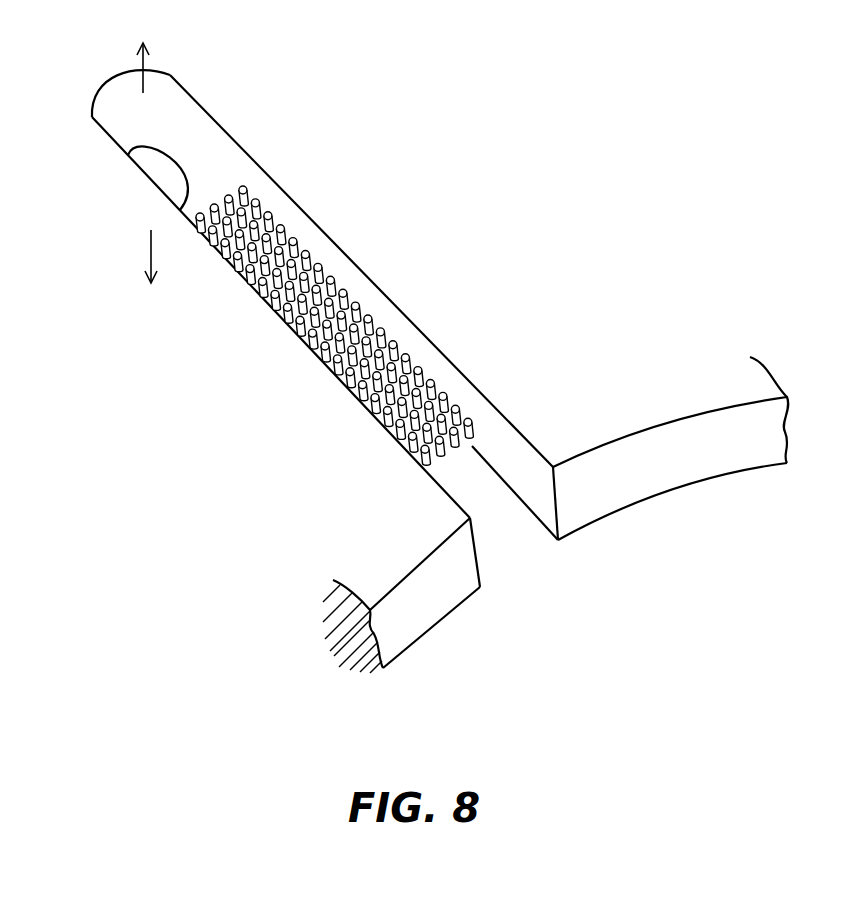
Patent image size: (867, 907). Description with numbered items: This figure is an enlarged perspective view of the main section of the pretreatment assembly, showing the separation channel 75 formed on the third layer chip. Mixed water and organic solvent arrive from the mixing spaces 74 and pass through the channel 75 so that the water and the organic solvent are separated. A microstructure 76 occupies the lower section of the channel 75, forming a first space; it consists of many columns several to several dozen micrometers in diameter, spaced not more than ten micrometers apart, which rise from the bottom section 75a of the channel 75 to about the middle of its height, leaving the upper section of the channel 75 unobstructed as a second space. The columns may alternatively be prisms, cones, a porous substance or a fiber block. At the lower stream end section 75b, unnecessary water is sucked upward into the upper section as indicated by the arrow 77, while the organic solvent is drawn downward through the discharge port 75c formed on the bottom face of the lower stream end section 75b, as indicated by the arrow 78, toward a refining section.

The mixing spaces 74 is at (690, 442).
The channel 75 is at (412, 335).
The bottom section of the channel 75a is at (480, 480).
The lower stream end section of the channel 75b is at (155, 93).
The discharge port 75c is at (182, 180).
The microstructure 76 is at (337, 287).
The arrow 77 is at (141, 62).
The arrow 78 is at (149, 257).